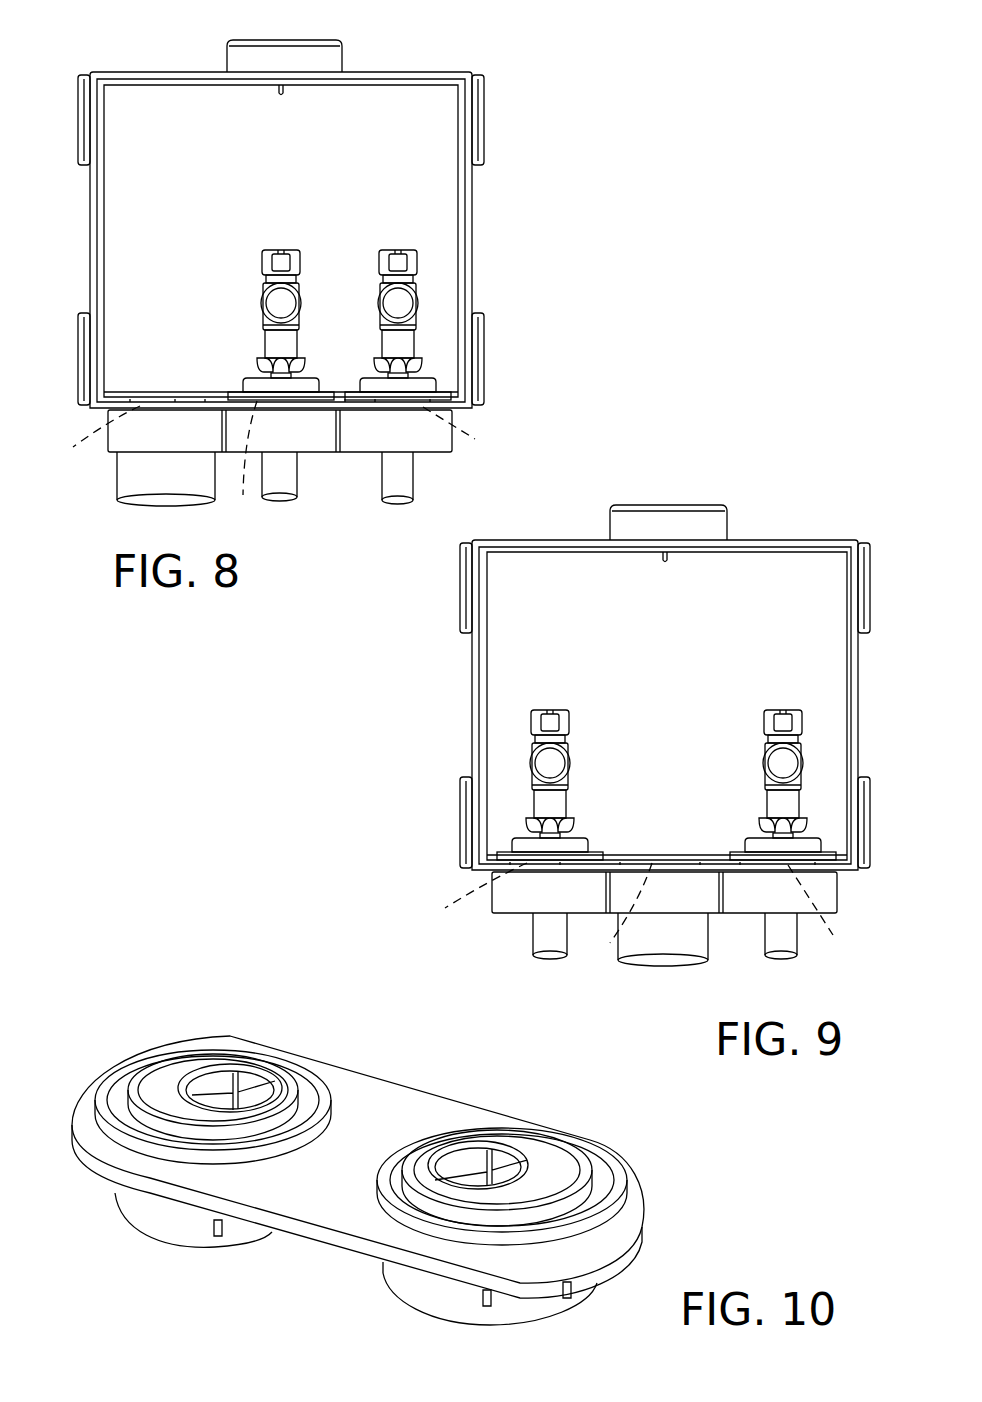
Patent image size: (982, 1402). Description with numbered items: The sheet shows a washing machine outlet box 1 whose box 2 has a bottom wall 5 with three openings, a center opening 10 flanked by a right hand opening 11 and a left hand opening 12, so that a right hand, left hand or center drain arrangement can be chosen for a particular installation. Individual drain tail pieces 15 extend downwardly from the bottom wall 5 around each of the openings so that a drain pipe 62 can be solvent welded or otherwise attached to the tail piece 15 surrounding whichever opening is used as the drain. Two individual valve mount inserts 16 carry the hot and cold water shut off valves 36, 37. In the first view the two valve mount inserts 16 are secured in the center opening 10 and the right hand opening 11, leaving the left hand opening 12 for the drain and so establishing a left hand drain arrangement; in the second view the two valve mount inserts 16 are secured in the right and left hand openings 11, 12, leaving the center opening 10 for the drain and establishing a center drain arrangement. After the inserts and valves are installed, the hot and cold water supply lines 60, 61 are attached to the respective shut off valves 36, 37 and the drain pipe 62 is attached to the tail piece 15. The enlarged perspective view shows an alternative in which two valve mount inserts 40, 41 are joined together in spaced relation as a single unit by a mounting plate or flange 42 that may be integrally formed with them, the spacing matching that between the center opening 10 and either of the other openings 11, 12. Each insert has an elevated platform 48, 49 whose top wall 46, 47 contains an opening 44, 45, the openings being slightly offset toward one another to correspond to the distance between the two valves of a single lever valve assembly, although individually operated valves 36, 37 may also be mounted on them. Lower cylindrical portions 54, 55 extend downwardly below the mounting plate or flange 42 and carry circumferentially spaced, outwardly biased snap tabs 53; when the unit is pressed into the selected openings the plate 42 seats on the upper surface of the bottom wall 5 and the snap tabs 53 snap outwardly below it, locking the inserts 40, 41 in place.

In FIG. 8, the washing machine outlet box 1 is at (105, 55).
In FIG. 9, the washing machine outlet box 1 is at (460, 648).
In FIG. 8, the box / housing 2 is at (428, 58).
In FIG. 9, the box / housing 2 is at (785, 537).
In FIG. 8, the bottom wall 5 is at (115, 395).
In FIG. 9, the bottom wall 5 is at (487, 862).
In FIG. 8, the center opening 10 is at (245, 466).
In FIG. 9, the center opening 10 is at (615, 911).
In FIG. 8, the right hand opening 11 is at (470, 432).
In FIG. 9, the right hand opening 11 is at (830, 909).
In FIG. 8, the left hand opening 12 is at (93, 434).
In FIG. 9, the left hand opening 12 is at (469, 892).
In FIG. 8, the drain tail piece 15 is at (142, 440).
In FIG. 9, the drain tail piece 15 is at (662, 898).
In FIG. 8, the valve mount insert 16 is at (236, 383).
In FIG. 9, the valve mount insert 16 is at (596, 838).
In FIG. 8, the hot water shut off valve 36 is at (255, 305).
In FIG. 9, the hot water shut off valve 36 is at (577, 750).
In FIG. 8, the cold water shut off valve 37 is at (440, 283).
In FIG. 9, the cold water shut off valve 37 is at (760, 757).
In FIG. 8, the hot water supply line 60 is at (290, 487).
In FIG. 9, the hot water supply line 60 is at (540, 930).
In FIG. 8, the cold water supply line 61 is at (413, 487).
In FIG. 9, the cold water supply line 61 is at (787, 940).
In FIG. 8, the drain pipe 62 is at (140, 492).
In FIG. 9, the drain pipe 62 is at (678, 940).
In FIG. 10, the valve mount insert 40 is at (127, 1050).
In FIG. 10, the valve mount insert 41 is at (588, 1137).
In FIG. 10, the mounting plate or flange 42 is at (358, 1083).
In FIG. 10, the opening 44 is at (255, 1072).
In FIG. 10, the opening 45 is at (473, 1143).
In FIG. 10, the top wall 46 is at (187, 1047).
In FIG. 10, the top wall 47 is at (538, 1135).
In FIG. 10, the elevated platform 48 is at (128, 1082).
In FIG. 10, the elevated platform 49 is at (370, 1178).
In FIG. 10, the snap tab 53 is at (232, 1232).
In FIG. 10, the lower cylindrical portion 54 is at (145, 1213).
In FIG. 10, the lower cylindrical portion 55 is at (415, 1297).